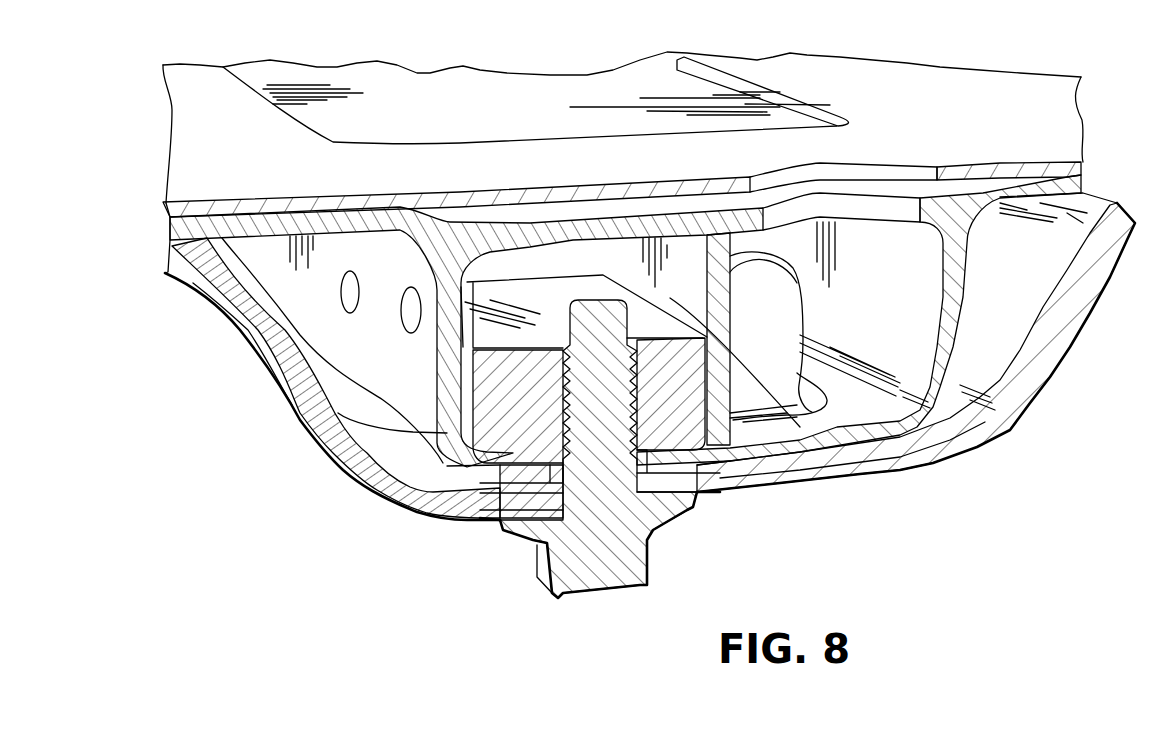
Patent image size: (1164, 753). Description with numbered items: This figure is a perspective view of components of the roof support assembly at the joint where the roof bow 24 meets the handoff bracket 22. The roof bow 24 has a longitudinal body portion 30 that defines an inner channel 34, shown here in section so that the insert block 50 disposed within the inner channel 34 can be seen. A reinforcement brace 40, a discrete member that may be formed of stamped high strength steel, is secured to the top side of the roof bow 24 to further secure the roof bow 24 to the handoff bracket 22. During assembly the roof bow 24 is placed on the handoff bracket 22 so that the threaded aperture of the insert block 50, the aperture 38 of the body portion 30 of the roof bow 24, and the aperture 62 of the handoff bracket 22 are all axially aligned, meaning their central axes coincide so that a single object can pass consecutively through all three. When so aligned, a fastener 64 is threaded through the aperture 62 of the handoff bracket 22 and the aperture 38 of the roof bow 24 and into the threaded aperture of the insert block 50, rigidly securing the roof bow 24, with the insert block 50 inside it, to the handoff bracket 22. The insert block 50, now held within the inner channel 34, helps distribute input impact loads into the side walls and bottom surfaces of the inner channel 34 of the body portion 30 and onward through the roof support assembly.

The reinforcement brace 40 is at (211, 98).
The roof bow 24 is at (253, 227).
The body portion 30 is at (327, 282).
The handoff bracket 22 is at (703, 480).
The inner channel 34 is at (800, 427).
The aperture of the body portion 38 is at (470, 517).
The insert block 50 is at (395, 485).
The aperture of the handoff bracket 62 is at (560, 487).
The fastener 64 is at (545, 590).